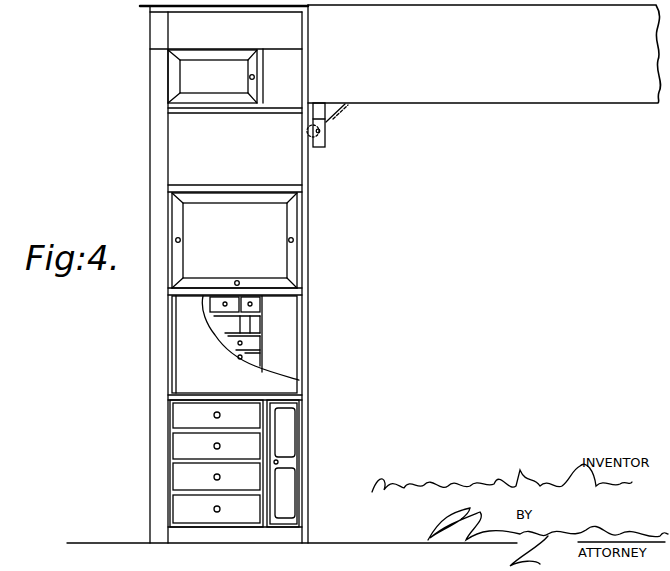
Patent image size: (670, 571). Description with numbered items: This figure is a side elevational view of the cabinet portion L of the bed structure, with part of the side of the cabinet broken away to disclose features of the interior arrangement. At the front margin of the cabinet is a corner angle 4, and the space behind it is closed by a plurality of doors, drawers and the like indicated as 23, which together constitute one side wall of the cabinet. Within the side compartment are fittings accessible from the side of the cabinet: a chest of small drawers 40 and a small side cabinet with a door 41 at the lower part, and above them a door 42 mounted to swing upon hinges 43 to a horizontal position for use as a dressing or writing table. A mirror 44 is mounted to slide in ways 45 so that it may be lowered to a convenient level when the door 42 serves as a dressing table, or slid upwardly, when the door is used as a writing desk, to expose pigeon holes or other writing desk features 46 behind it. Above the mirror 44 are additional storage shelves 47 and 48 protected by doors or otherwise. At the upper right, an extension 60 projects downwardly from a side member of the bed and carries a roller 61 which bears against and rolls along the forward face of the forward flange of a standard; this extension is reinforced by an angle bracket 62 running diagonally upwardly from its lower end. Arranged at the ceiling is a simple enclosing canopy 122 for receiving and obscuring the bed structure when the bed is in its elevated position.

The corner angle 4 is at (303, 171).
The enclosing canopy 122 is at (484, 54).
The storage shelf 48 is at (192, 112).
The storage shelf 47 is at (210, 189).
The ways 45 is at (172, 211).
The mirror 44 is at (278, 253).
The door 42 is at (180, 344).
The pigeon holes 46 is at (250, 331).
The hinges 43 is at (292, 388).
The small drawers 40 is at (182, 450).
The doors, drawers, etc. 23 is at (283, 443).
The small side cabinet with door 41 is at (285, 490).
The extension 60 is at (326, 141).
The roller 61 is at (311, 134).
The angle bracket 62 is at (340, 113).
The cabinet portion L is at (150, 306).